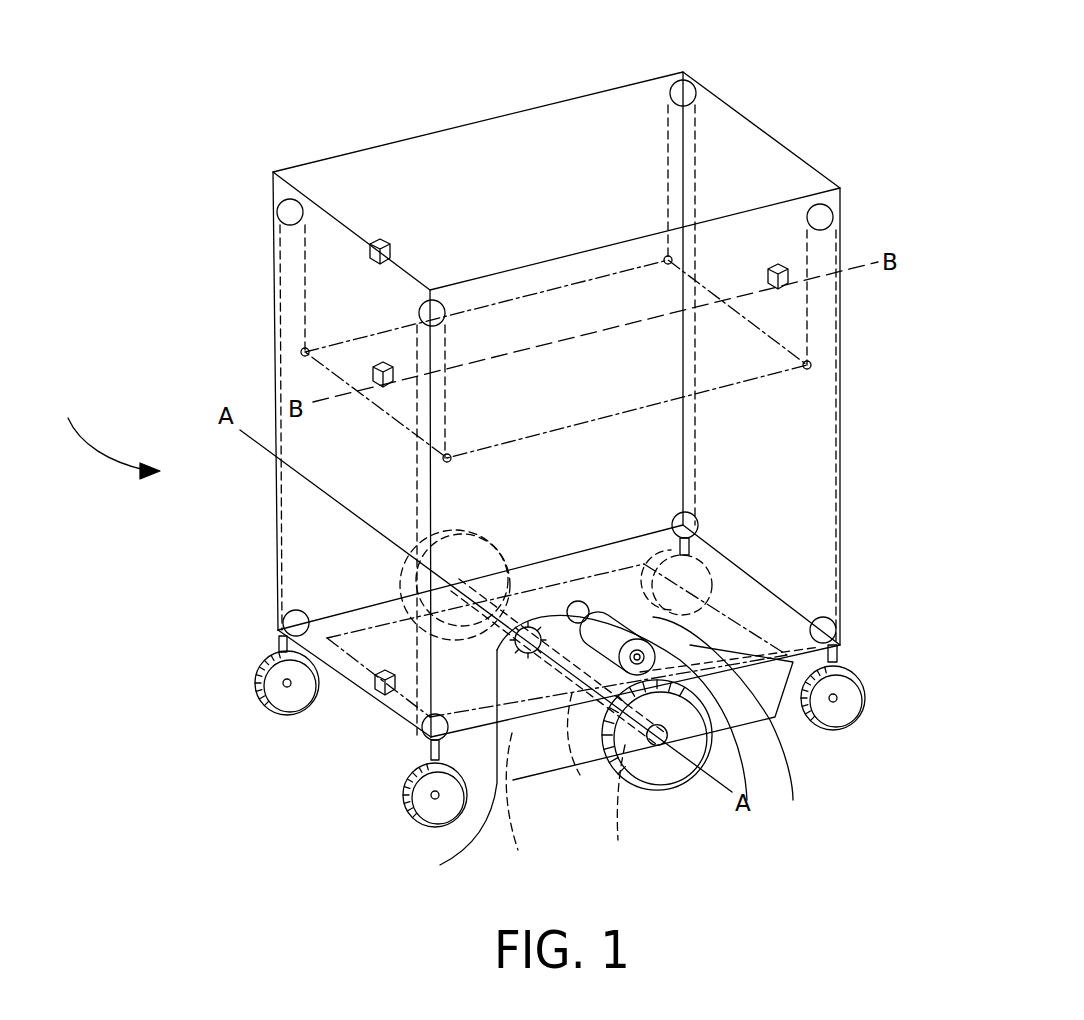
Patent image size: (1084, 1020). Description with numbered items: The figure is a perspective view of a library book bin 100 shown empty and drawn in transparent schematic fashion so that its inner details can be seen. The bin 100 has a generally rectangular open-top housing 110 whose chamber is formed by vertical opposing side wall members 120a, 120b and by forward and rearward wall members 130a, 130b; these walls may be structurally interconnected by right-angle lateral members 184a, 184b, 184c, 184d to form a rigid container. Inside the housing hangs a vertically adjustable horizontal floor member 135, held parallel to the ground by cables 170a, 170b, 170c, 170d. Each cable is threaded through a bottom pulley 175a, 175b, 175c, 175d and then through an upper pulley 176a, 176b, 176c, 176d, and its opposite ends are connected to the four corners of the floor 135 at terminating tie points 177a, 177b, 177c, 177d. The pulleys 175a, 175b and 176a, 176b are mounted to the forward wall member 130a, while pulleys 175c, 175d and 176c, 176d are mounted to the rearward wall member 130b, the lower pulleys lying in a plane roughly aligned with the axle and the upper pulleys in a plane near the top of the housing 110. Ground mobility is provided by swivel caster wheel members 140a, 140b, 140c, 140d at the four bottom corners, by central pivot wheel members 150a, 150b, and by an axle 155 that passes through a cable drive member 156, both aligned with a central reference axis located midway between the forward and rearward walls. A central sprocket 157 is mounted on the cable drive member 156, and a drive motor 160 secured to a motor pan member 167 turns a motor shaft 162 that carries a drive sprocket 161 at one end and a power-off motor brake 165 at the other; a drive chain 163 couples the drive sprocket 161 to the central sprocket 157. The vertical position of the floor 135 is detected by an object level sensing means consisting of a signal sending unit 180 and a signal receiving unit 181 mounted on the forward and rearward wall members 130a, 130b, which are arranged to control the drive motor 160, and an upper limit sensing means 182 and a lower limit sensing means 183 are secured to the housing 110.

The book bin 100 is at (102, 433).
The housing 110 is at (439, 127).
The side wall member 120a is at (533, 106).
The side wall member 120b is at (842, 407).
The forward wall member 130a is at (342, 287).
The rearward wall member 130b is at (796, 162).
The floor member 135 is at (560, 455).
The bin wheel member 140a is at (256, 668).
The bin wheel member 140b is at (405, 800).
The bin wheel member 140c is at (865, 703).
The bin wheel member 140d is at (708, 567).
The central pivot wheel member 150a is at (405, 553).
The central pivot wheel member 150b is at (673, 780).
The axle 155 is at (618, 840).
The cable drive member 156 is at (575, 773).
The central sprocket 157 is at (442, 860).
The drive motor 160 is at (735, 700).
The drive sprocket 161 is at (580, 600).
The motor shaft 162 is at (545, 628).
The drive chain 163 is at (618, 752).
The motor brake 165 is at (715, 705).
The motor pan member 167 is at (778, 714).
The cable 170a is at (278, 242).
The cable 170b is at (448, 380).
The cable 170c is at (842, 303).
The cable 170d is at (697, 138).
The lower pulley 175a is at (288, 617).
The lower pulley 175b is at (425, 745).
The lower pulley 175c is at (830, 621).
The lower pulley 175d is at (698, 535).
The upper pulley 176a is at (285, 200).
The upper pulley 176b is at (442, 312).
The upper pulley 176c is at (826, 214).
The upper pulley 176d is at (687, 88).
The terminating tie point 177a is at (300, 352).
The terminating tie point 177b is at (450, 462).
The terminating tie point 177c is at (803, 365).
The terminating tie point 177d is at (665, 265).
The signal sending unit 180 is at (375, 385).
The signal receiving unit 181 is at (768, 272).
The upper limit sensing means 182 is at (372, 243).
The lower limit sensing means 183 is at (385, 700).
The lateral member 184a is at (548, 578).
The lateral member 184b is at (516, 851).
The lateral member 184c is at (380, 680).
The lateral member 184d is at (800, 610).